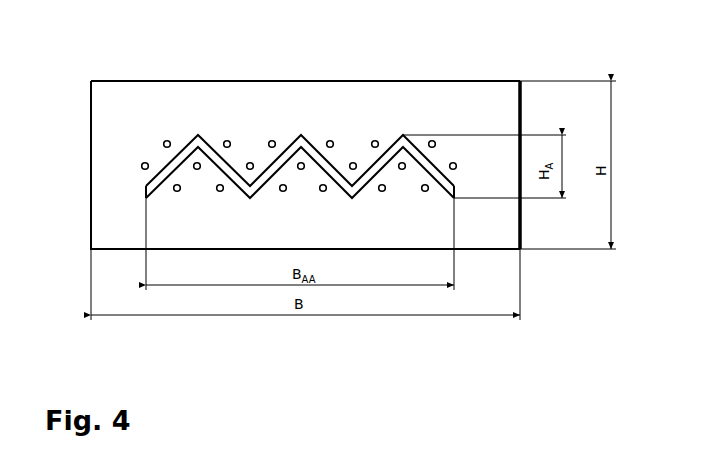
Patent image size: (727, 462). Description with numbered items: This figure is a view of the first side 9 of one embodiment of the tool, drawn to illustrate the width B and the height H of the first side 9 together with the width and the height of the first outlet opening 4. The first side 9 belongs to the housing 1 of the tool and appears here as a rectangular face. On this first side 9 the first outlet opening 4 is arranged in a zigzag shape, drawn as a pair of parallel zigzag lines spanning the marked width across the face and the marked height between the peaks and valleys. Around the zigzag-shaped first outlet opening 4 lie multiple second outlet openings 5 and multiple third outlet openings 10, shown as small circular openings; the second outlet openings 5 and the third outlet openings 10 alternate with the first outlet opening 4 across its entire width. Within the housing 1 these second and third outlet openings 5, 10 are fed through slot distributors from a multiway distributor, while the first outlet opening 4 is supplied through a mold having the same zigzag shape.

The housing 1 is at (396, 81).
The first side 9 is at (473, 98).
The first outlet opening 4 is at (207, 143).
The second outlet openings 5 is at (162, 141).
The third outlet openings 10 is at (146, 186).